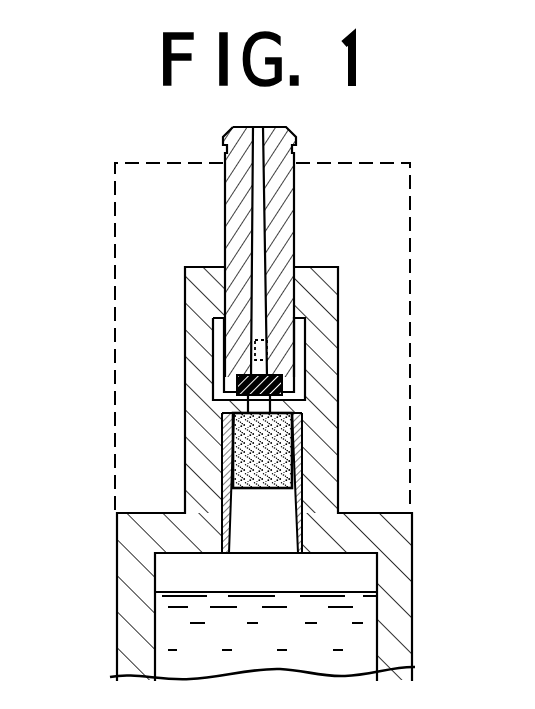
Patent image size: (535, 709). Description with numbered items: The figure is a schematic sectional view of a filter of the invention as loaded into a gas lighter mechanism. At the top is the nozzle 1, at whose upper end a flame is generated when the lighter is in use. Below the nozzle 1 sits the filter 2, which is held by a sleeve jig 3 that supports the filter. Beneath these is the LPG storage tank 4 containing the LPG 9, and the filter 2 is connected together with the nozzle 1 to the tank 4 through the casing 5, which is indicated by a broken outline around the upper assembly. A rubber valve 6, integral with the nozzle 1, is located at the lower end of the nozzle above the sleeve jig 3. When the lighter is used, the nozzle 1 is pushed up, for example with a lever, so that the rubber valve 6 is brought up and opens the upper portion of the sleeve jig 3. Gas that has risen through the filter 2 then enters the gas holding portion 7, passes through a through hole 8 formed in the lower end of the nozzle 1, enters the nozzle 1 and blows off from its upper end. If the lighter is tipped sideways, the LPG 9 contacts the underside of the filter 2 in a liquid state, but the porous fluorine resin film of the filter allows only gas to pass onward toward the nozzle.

The nozzle 1 is at (290, 136).
The filter 2 is at (294, 429).
The sleeve jig 3 is at (302, 484).
The LPG storage tank 4 is at (405, 642).
The casing 5 is at (410, 249).
The rubber valve 6 is at (240, 388).
The gas holding portion 7 is at (215, 350).
The through hole 8 is at (267, 350).
The LPG 9 is at (205, 645).